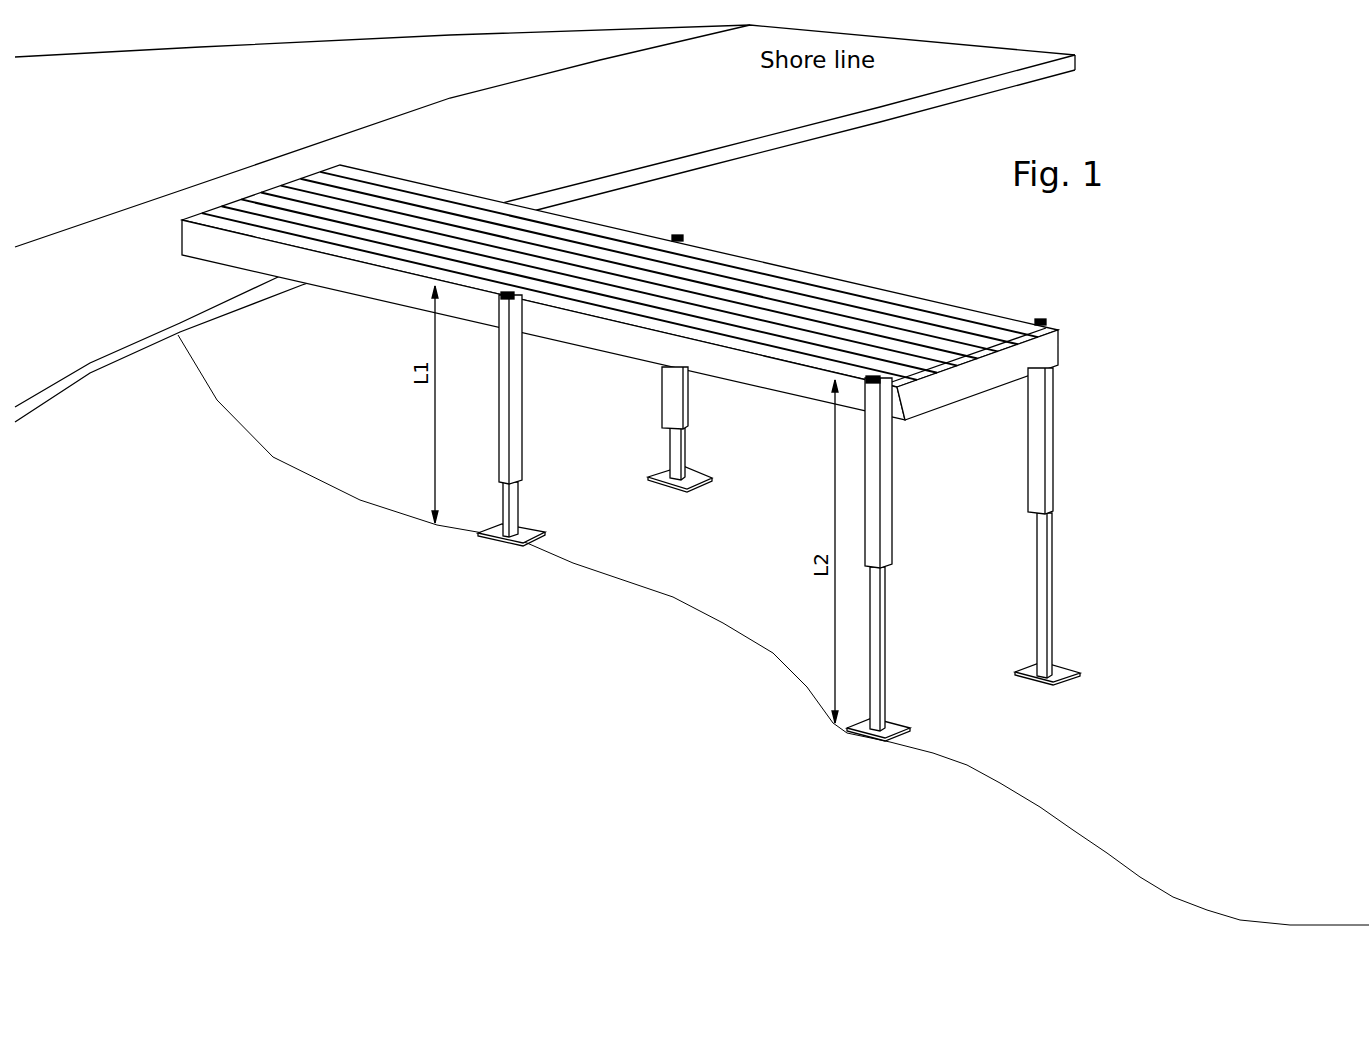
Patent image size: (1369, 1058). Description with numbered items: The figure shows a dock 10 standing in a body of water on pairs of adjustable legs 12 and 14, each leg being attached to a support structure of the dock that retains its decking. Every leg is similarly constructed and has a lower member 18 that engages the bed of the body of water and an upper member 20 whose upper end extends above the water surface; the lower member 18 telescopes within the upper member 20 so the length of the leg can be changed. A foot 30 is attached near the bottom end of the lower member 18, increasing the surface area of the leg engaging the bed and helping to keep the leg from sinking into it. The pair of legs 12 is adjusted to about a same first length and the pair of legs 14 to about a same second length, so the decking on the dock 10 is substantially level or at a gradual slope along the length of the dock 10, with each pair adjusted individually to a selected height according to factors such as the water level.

The dock 10 is at (560, 283).
The pair of adjustable legs 12 is at (532, 259).
The pair of adjustable legs 14 is at (943, 370).
The lower member 18 is at (724, 577).
The upper member 20 is at (712, 431).
The foot 30 is at (764, 638).